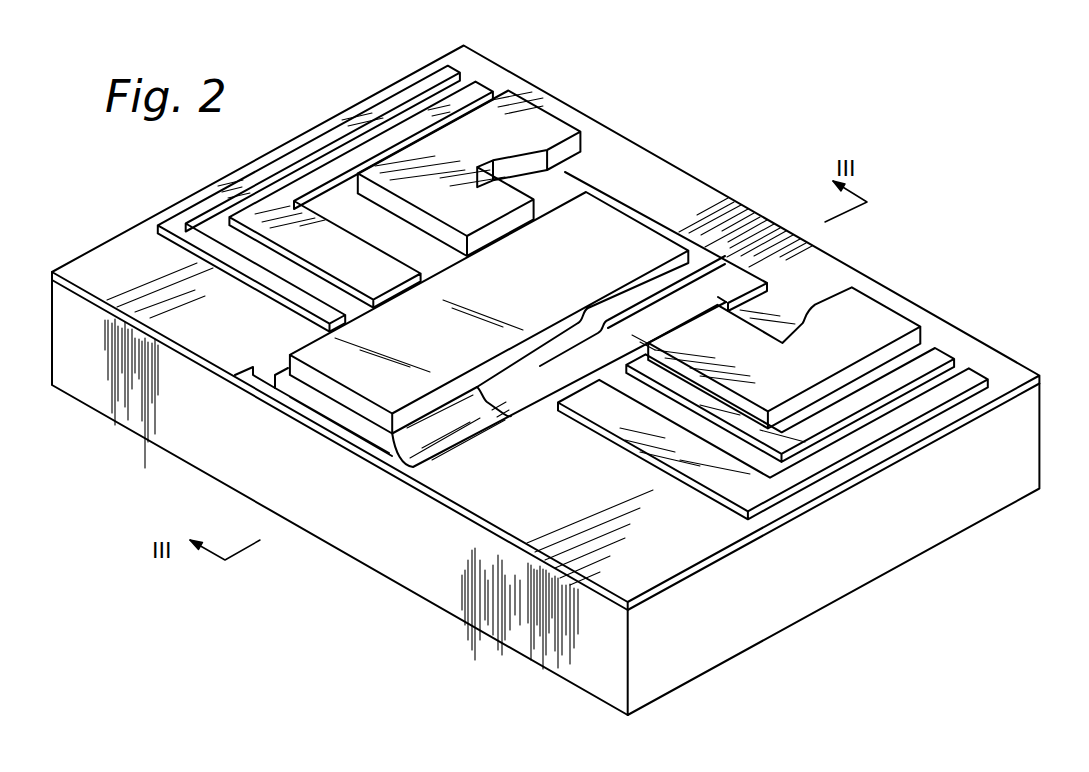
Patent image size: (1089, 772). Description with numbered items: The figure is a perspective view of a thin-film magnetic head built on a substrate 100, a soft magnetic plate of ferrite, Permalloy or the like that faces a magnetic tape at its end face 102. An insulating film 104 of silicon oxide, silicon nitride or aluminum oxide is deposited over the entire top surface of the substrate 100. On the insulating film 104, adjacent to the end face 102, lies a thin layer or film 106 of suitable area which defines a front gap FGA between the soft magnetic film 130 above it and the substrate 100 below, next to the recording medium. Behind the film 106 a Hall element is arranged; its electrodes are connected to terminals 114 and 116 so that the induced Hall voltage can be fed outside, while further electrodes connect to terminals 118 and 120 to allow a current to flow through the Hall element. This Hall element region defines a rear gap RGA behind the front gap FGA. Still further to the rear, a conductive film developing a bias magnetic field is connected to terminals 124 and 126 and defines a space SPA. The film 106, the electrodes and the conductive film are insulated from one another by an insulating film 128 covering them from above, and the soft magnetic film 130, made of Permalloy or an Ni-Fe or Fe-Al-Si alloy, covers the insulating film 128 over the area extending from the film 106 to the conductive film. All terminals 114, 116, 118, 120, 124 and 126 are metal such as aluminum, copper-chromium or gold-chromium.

The substrate 100 is at (778, 628).
The end face 102 is at (421, 570).
The insulating film 104 is at (853, 487).
The thin layer or film 106 is at (345, 425).
The terminal 114 is at (470, 58).
The terminal 116 is at (953, 350).
The terminal 118 is at (490, 92).
The terminal 120 is at (983, 372).
The terminal 124 is at (563, 128).
The terminal 126 is at (903, 320).
The insulating film 128 is at (698, 247).
The soft magnetic film 130 is at (300, 388).
The rear gap RGA is at (565, 343).
The space SPA is at (668, 292).
The front gap FGA is at (378, 455).